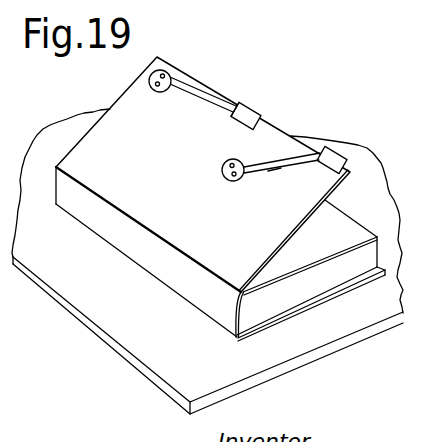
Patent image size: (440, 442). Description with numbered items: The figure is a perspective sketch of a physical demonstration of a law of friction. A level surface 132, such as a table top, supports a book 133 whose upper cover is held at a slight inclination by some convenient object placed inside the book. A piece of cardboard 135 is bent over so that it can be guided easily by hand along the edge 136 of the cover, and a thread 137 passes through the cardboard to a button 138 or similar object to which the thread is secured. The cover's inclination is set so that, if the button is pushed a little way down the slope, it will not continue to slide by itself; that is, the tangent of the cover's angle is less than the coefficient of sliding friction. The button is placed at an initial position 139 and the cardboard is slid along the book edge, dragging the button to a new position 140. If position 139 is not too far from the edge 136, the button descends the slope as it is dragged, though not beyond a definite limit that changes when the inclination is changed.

The level surface 132 is at (125, 325).
The book 133 is at (260, 312).
The piece of cardboard 135 is at (259, 108).
The edge of the cover 136 is at (237, 100).
The thread 137 is at (182, 96).
The button 138 is at (166, 72).
The initial button position 139 is at (150, 109).
The new button position 140 is at (214, 183).